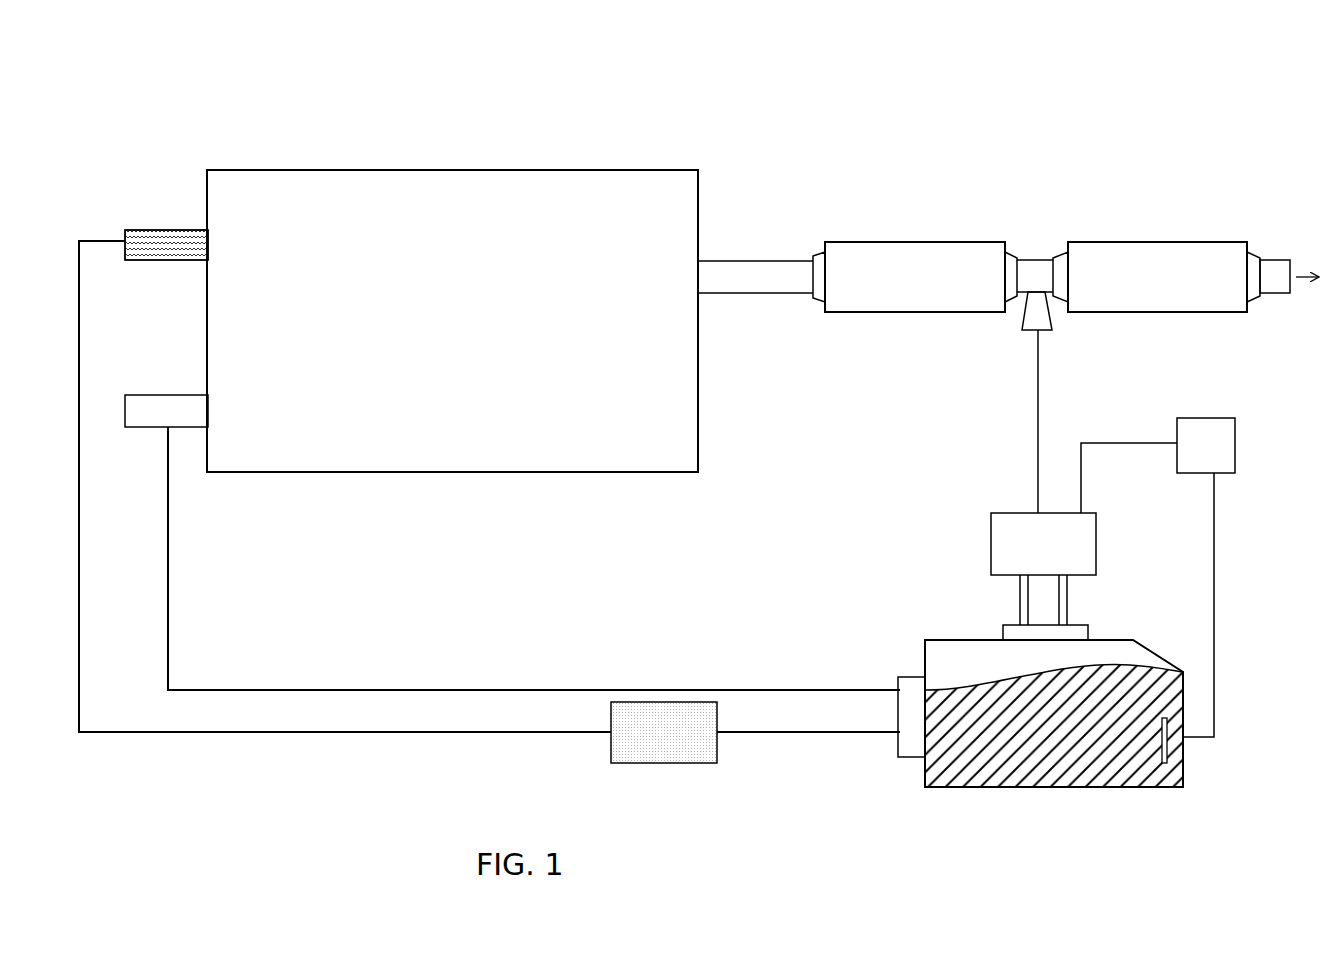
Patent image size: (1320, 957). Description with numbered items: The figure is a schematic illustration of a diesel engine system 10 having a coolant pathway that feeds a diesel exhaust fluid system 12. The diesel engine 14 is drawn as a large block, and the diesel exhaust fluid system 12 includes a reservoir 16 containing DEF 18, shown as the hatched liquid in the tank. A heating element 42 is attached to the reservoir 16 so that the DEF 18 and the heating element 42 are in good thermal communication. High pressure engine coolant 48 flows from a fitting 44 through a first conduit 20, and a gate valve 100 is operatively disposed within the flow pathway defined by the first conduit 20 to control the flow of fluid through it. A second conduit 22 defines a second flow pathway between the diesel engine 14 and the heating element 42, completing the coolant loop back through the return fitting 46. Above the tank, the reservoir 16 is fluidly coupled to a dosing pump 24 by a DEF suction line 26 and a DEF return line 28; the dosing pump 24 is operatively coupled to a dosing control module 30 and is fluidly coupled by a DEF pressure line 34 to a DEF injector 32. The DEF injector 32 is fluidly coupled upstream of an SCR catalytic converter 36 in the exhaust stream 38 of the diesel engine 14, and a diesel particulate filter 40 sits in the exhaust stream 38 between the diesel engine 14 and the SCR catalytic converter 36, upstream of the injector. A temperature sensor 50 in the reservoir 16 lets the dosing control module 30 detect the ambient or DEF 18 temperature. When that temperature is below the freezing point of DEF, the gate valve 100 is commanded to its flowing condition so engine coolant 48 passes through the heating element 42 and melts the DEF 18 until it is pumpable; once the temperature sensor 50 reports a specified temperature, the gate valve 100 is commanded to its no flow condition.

The diesel engine system 10 is at (810, 125).
The diesel exhaust fluid system 12 is at (1060, 730).
The diesel engine 14 is at (356, 170).
The reservoir 16 is at (925, 640).
The DEF 18 is at (981, 770).
The first conduit 20 is at (298, 732).
The second conduit 22 is at (380, 690).
The dosing pump 24 is at (1005, 513).
The DEF suction line 26 is at (1067, 596).
The DEF return line 28 is at (1020, 598).
The dosing control module 30 is at (1235, 452).
The DEF injector 32 is at (1049, 332).
The DEF pressure line 34 is at (1036, 412).
The SCR catalytic converter 36 is at (1168, 242).
The exhaust stream 38 is at (1278, 260).
The diesel particulate filter 40 is at (953, 242).
The heating element 42 is at (905, 760).
The fitting 44 is at (137, 230).
The fuel return fitting 46 is at (148, 395).
The engine coolant 48 is at (171, 252).
The temperature sensor 50 is at (1180, 757).
The gate valve 100 is at (672, 765).